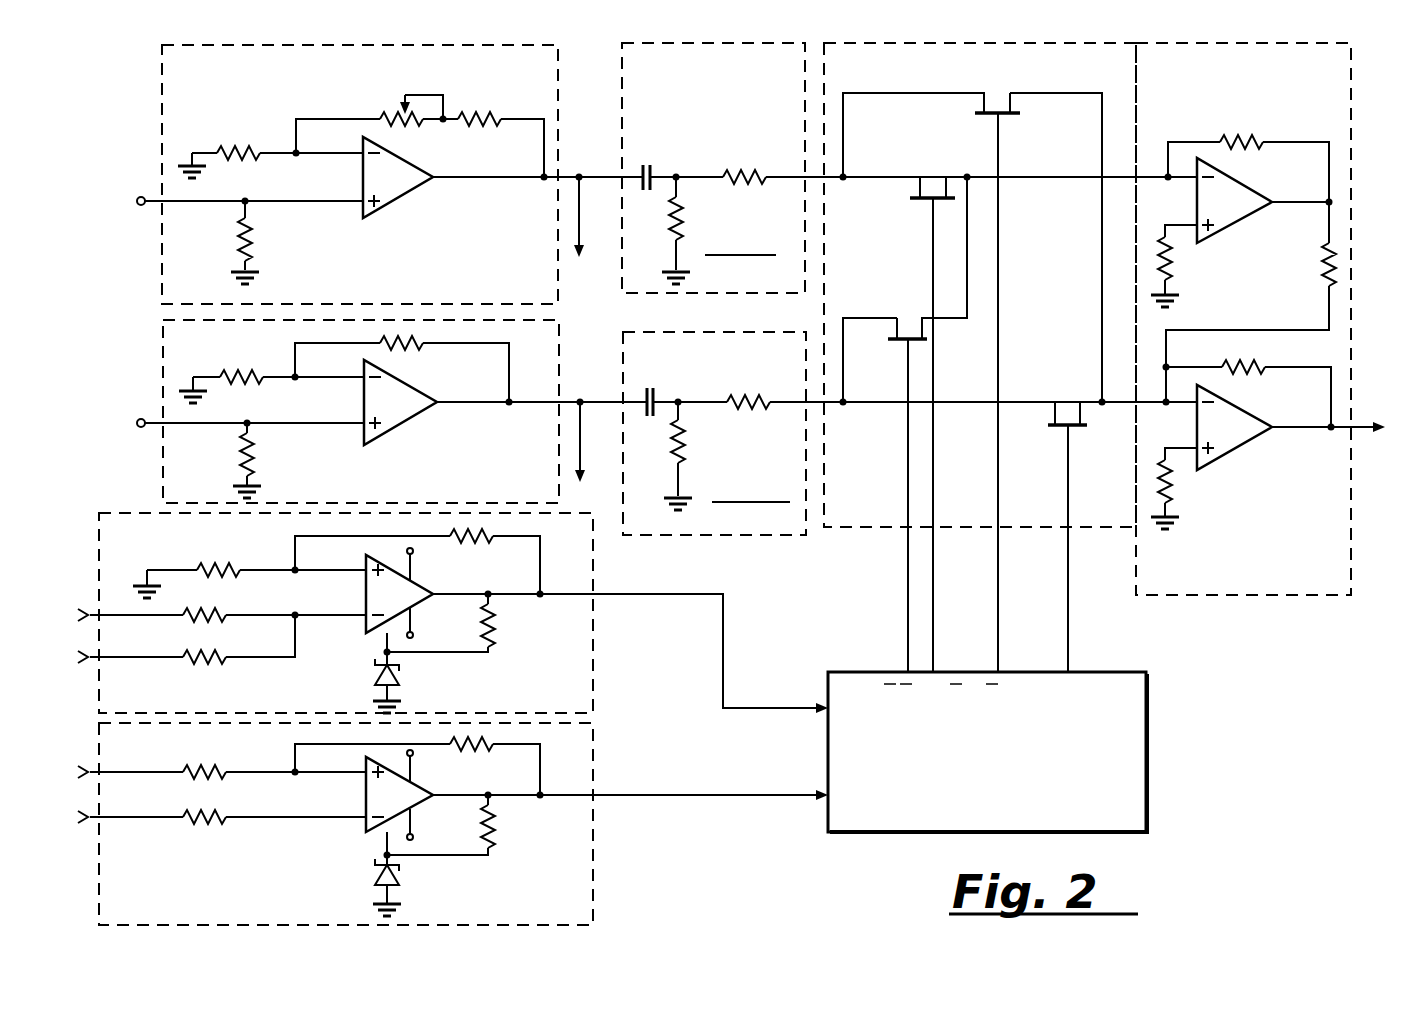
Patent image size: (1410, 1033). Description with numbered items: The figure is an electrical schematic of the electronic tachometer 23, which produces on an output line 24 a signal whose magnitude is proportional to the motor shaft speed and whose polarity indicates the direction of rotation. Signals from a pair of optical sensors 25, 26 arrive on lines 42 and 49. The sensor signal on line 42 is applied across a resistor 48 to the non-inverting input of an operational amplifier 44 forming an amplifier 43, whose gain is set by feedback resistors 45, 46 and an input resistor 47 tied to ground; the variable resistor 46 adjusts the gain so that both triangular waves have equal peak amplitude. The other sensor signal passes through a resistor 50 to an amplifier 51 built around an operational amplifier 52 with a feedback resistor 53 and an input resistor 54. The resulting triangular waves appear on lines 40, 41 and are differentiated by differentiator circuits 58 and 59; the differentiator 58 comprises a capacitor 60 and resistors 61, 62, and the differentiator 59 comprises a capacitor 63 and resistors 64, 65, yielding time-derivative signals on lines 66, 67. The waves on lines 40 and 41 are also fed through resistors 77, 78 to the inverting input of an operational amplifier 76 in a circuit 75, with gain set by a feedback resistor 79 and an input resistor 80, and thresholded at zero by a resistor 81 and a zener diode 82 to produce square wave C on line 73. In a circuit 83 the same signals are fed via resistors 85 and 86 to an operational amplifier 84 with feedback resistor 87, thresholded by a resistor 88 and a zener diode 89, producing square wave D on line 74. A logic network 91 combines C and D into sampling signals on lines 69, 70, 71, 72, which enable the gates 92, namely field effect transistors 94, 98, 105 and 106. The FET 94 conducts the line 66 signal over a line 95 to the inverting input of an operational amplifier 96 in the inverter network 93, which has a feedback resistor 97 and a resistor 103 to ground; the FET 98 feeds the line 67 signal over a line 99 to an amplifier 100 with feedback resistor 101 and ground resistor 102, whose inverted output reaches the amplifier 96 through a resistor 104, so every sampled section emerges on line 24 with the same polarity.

The electronic tachometer 23 is at (1190, 648).
The output line 24 is at (1357, 427).
The optical sensor 25 is at (63, 233).
The optical sensor 26 is at (63, 455).
The line 40 is at (601, 180).
The line 41 is at (601, 406).
The line 42 is at (150, 198).
The amplifier 43 is at (370, 175).
The operational amplifier 44 is at (398, 202).
The feedback resistor 45 is at (478, 123).
The variable feedback resistor 46 is at (405, 122).
The input resistor 47 is at (256, 122).
The resistor 48 is at (255, 242).
The line 49 is at (152, 420).
The resistor 50 is at (258, 452).
The amplifier 51 is at (371, 411).
The operational amplifier 52 is at (415, 409).
The feedback resistor 53 is at (409, 346).
The input resistor 54 is at (249, 374).
The differentiator circuit 58 is at (716, 40).
The differentiator circuit 59 is at (699, 328).
The capacitor 60 is at (653, 172).
The resistor 61 is at (671, 223).
The resistor 62 is at (744, 170).
The capacitor 63 is at (655, 400).
The resistor 64 is at (678, 441).
The resistor 65 is at (745, 412).
The line 66 is at (810, 175).
The line 67 is at (812, 424).
The line 69 is at (998, 644).
The line 70 is at (908, 640).
The line 71 is at (935, 637).
The line 72 is at (1068, 643).
The line 73 is at (690, 593).
The line 74 is at (672, 798).
The circuit 75 is at (578, 572).
The operational amplifier 76 is at (418, 587).
The resistor 77 is at (223, 613).
The resistor 78 is at (223, 656).
The feedback resistor 79 is at (480, 541).
The input resistor 80 is at (225, 566).
The resistor 81 is at (496, 637).
The zener diode 82 is at (401, 678).
The circuit 83 is at (598, 760).
The operational amplifier 84 is at (428, 787).
The resistor 85 is at (222, 813).
The resistor 86 is at (227, 770).
The feedback resistor 87 is at (484, 744).
The resistor 88 is at (506, 825).
The zener diode 89 is at (404, 883).
The logic network 91 is at (1146, 772).
The gates 92 is at (1010, 357).
The inverter network 93 is at (1262, 319).
The field effect transistor 94 is at (1013, 104).
The line 95 is at (1119, 404).
The operational amplifier 96 is at (1240, 444).
The feedback resistor 97 is at (1252, 370).
The field effect transistor 98 is at (908, 324).
The line 99 is at (1118, 175).
The operational amplifier 100 is at (1235, 215).
The feedback resistor 101 is at (1247, 140).
The resistor 102 is at (1170, 263).
The resistor 103 is at (1176, 490).
The resistor 104 is at (1323, 263).
The field effect transistor 105 is at (926, 176).
The field effect transistor 106 is at (1070, 403).